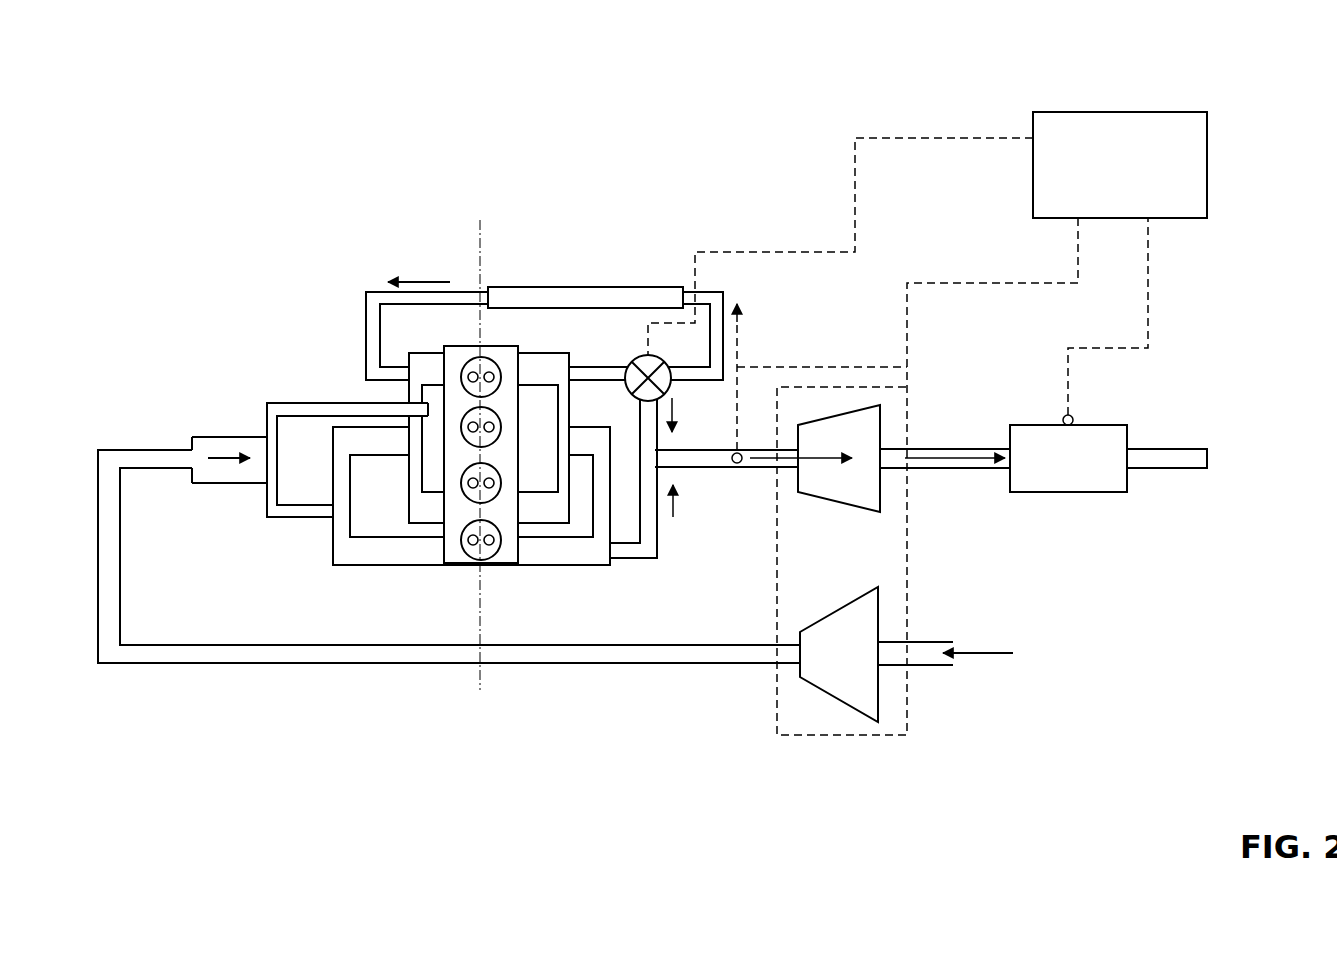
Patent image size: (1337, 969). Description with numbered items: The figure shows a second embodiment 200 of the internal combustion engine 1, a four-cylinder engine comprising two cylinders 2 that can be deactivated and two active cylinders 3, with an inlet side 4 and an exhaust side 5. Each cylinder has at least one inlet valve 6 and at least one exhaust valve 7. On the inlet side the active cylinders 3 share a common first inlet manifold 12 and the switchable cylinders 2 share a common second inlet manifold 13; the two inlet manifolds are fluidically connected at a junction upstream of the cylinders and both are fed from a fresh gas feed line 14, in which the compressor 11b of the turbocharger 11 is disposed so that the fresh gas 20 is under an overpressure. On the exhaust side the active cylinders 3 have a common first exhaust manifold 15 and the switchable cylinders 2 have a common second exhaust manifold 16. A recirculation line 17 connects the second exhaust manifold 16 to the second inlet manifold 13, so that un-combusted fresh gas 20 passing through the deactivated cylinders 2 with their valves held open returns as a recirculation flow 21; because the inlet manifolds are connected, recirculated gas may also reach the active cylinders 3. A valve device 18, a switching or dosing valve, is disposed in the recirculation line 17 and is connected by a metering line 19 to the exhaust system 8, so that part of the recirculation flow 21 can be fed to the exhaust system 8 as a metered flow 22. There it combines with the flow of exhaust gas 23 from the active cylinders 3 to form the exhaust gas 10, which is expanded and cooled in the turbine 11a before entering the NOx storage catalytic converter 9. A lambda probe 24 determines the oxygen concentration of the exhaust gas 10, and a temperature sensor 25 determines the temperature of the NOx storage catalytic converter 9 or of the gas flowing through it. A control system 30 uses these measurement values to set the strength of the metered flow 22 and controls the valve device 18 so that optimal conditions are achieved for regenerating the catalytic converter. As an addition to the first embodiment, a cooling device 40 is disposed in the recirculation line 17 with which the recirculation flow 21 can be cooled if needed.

The internal combustion engine 1 is at (500, 565).
The cylinders that can be deactivated 2 is at (503, 470).
The active cylinders 3 is at (462, 445).
The inlet side 4 is at (394, 258).
The exhaust side 5 is at (531, 256).
The inlet valve 6 is at (463, 543).
The exhaust valve 7 is at (498, 553).
The exhaust system 8 is at (1030, 530).
The NOx storage catalytic converter 9 is at (1078, 495).
The exhaust gas 10 is at (970, 470).
The turbocharger 11 is at (910, 397).
The turbine 11a is at (876, 428).
The compressor 11b is at (862, 678).
The first inlet manifold 12 is at (363, 550).
The second inlet manifold 13 is at (406, 483).
The fresh gas feed line 14 is at (118, 553).
The first exhaust manifold 15 is at (593, 557).
The second exhaust manifold 16 is at (530, 510).
The recirculation line 17 is at (737, 300).
The valve device 18 is at (633, 345).
The metering line 19 is at (676, 413).
The fresh gas 20 is at (223, 455).
The recirculation flow 21 is at (427, 282).
The metered flow 22 is at (678, 452).
The flow of exhaust gas 23 is at (673, 518).
The lambda probe 24 is at (737, 464).
The temperature sensor 25 is at (1072, 418).
The control system 30 is at (1208, 162).
The cooling device 40 is at (590, 287).
The second embodiment 200 is at (1256, 52).